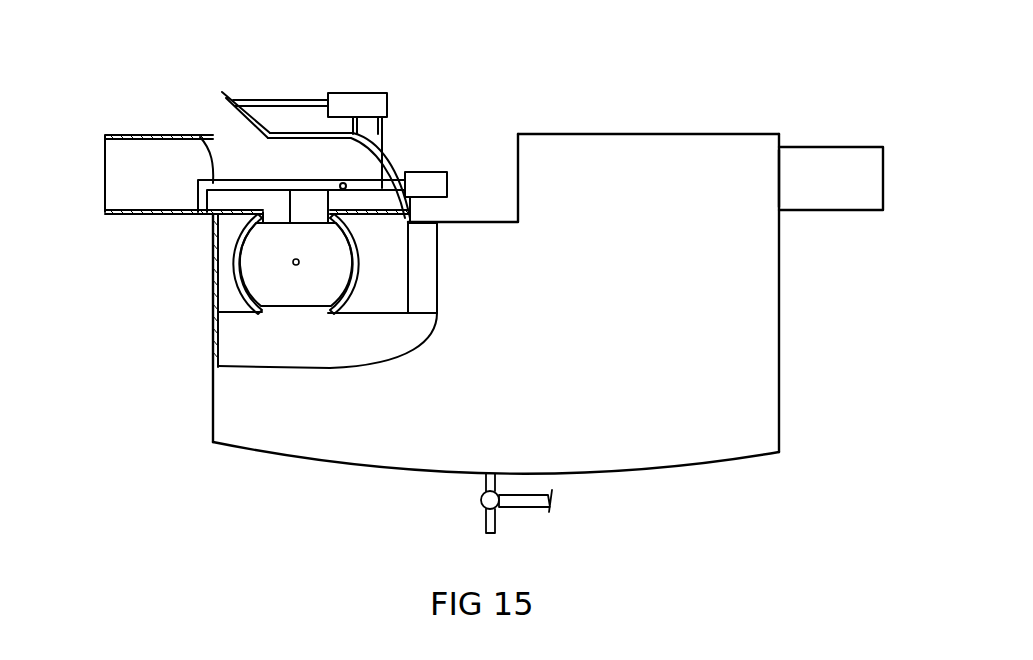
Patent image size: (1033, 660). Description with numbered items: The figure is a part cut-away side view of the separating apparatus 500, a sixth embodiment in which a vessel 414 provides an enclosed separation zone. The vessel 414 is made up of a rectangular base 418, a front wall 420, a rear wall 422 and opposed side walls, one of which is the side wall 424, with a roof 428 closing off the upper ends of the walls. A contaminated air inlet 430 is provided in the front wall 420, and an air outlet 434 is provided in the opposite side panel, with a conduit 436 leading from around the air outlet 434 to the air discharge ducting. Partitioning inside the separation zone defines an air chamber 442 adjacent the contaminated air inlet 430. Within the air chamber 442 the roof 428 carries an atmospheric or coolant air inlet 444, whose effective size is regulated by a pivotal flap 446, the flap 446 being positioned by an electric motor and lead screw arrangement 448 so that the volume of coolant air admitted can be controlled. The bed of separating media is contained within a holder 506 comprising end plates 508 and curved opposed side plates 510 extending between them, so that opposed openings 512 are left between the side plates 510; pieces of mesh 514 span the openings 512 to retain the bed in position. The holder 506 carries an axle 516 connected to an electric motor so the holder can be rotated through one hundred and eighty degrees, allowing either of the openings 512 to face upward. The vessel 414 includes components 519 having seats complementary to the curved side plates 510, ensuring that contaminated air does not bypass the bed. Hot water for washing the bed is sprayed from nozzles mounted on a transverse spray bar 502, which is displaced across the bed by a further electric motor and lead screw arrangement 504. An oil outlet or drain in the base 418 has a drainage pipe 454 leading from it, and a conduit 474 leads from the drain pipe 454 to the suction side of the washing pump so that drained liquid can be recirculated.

The vessel 414 is at (559, 305).
The rectangular base 418 is at (634, 477).
The front wall 420 is at (212, 230).
The rear wall 422 is at (780, 296).
The side wall 424 is at (626, 329).
The roof 428 is at (647, 136).
The contaminated air inlet 430 is at (88, 172).
The air outlet 434 is at (766, 187).
The conduit 436 is at (847, 166).
The air chamber 442 is at (154, 185).
The coolant air inlet 444 is at (249, 135).
The pivotal flap 446 is at (232, 103).
The electric motor/lead screw arrangement 448 is at (365, 108).
The drainage pipe 454 is at (492, 478).
The conduit 474 is at (527, 504).
The separating apparatus 500 is at (786, 90).
The transverse spray bar 502 is at (200, 140).
The electric motor and lead screw arrangement 504 is at (432, 182).
The holder 506 is at (290, 333).
The end plates 508 is at (320, 273).
The side plates 510 is at (357, 240).
The openings 512 is at (313, 211).
The pieces of mesh 514 is at (291, 212).
The axle 516 is at (290, 262).
The components 519 is at (235, 306).